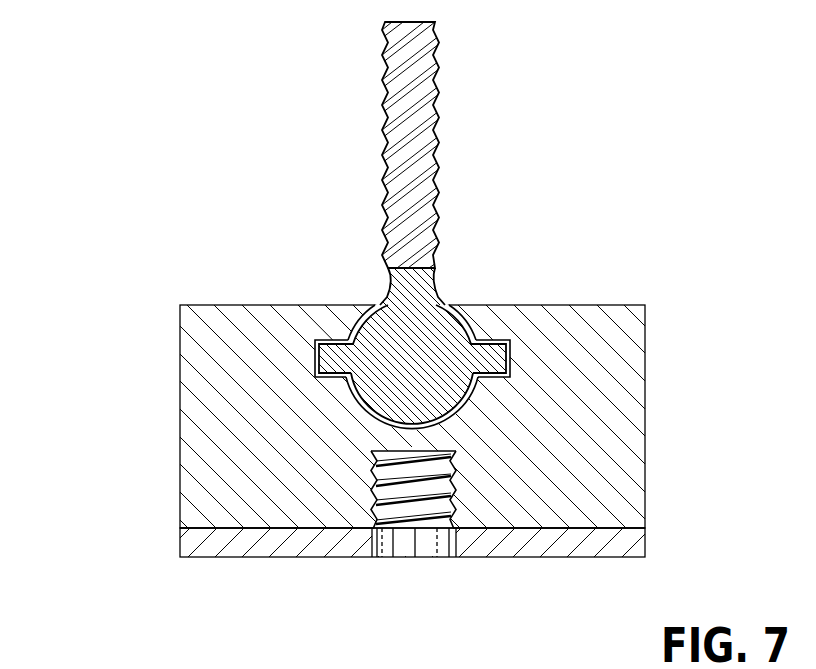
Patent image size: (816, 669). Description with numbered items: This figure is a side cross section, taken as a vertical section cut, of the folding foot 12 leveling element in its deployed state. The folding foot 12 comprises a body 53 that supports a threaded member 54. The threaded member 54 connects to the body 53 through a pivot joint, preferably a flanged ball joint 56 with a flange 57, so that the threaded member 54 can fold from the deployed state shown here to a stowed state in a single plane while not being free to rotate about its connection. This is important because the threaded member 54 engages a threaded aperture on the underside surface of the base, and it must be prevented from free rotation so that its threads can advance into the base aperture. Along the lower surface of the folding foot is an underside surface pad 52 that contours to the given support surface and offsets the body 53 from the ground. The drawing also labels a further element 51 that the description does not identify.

The folding foot 12 is at (76, 376).
The bore in plate 51 is at (422, 512).
The underside surface pad 52 is at (295, 540).
The body 53 is at (645, 416).
The threaded member 54 is at (438, 159).
The ball joint 56 is at (458, 329).
The flange 57 is at (331, 352).